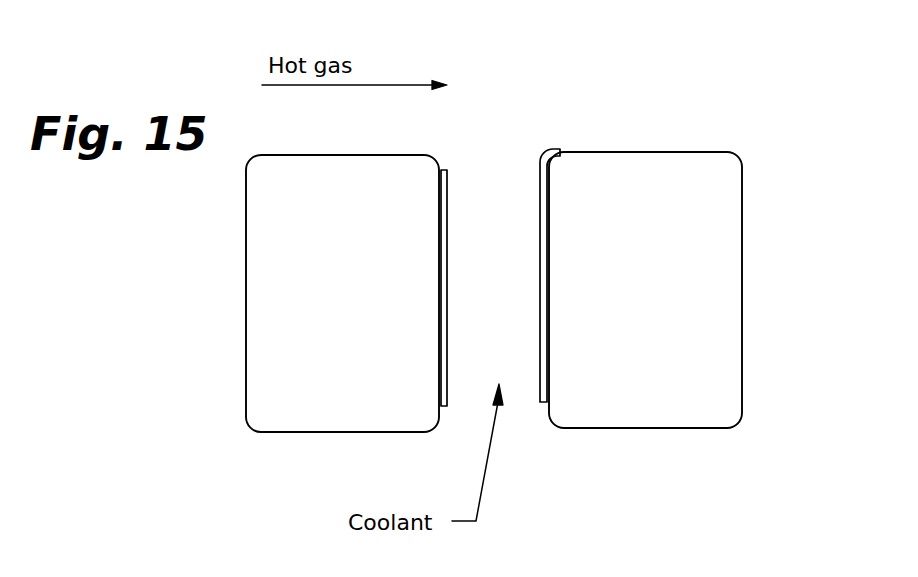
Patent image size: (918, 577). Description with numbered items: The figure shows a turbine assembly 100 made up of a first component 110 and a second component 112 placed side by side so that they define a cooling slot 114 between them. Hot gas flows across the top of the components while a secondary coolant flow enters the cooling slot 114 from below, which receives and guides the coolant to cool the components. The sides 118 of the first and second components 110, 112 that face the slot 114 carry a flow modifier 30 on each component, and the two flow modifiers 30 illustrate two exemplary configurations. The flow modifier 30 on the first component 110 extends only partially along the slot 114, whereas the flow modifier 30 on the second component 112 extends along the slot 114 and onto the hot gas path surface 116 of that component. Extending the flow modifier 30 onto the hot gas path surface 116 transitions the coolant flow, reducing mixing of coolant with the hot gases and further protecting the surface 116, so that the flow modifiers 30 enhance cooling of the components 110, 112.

The turbine assembly 100 is at (828, 177).
The first component 110 is at (283, 425).
The second component 112 is at (655, 415).
The cooling slot 114 is at (501, 228).
The hot gas path surface 116 is at (683, 152).
The sides 118 is at (553, 403).
The flow modifier 30 is at (447, 283).